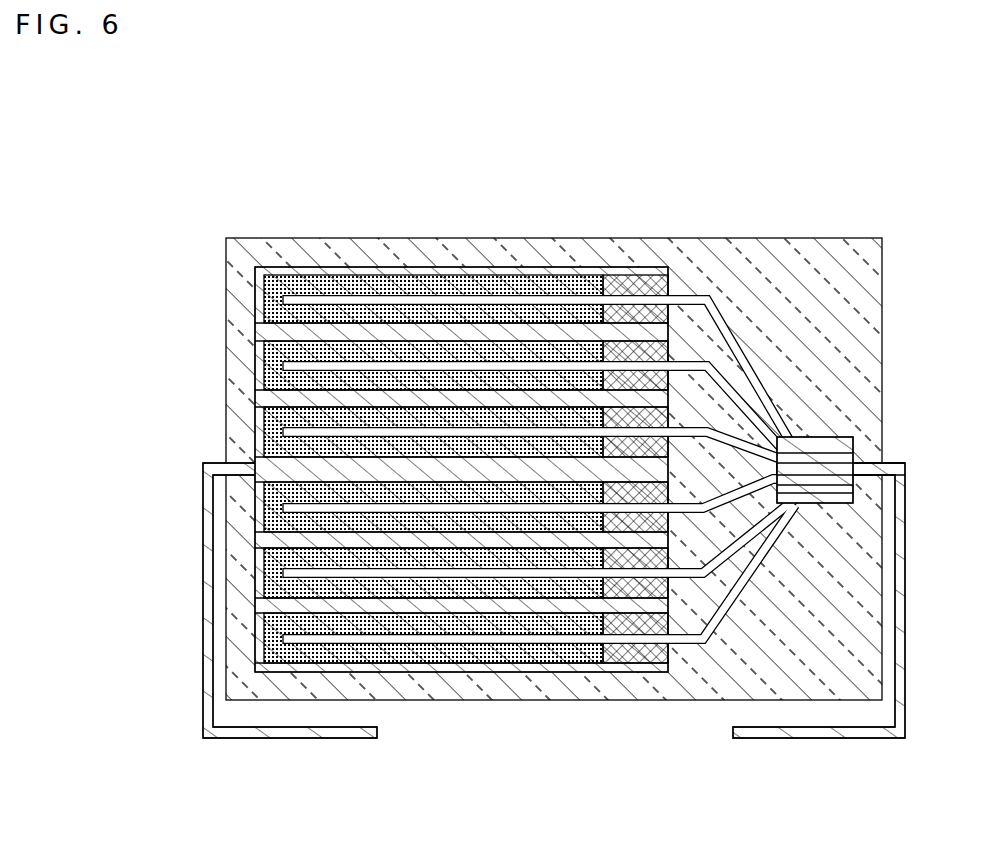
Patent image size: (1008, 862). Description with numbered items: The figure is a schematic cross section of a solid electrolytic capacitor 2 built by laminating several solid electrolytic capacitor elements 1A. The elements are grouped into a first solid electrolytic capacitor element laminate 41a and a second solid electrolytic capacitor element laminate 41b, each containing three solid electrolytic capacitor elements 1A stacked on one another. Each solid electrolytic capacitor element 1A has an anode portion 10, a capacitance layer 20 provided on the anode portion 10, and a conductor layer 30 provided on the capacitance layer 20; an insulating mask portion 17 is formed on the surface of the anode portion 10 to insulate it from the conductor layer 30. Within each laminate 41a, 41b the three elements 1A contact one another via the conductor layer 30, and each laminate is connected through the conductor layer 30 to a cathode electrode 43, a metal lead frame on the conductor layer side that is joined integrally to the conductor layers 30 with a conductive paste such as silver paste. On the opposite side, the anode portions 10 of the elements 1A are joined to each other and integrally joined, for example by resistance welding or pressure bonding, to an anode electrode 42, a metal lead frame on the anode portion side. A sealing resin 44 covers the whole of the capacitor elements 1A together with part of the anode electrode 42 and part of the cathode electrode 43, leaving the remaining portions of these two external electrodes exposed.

The solid electrolytic capacitor 2 is at (203, 211).
The solid electrolytic capacitor element 1A is at (486, 429).
The anode portion 10 is at (566, 298).
The insulating mask portion 17 is at (640, 290).
The capacitance layer 20 is at (458, 288).
The conductor layer 30 is at (332, 270).
The first solid electrolytic capacitor element laminate 41a is at (138, 270).
The second solid electrolytic capacitor element laminate 41b is at (138, 512).
The anode electrode 42 is at (800, 738).
The cathode electrode 43 is at (256, 738).
The sealing resin 44 is at (832, 270).